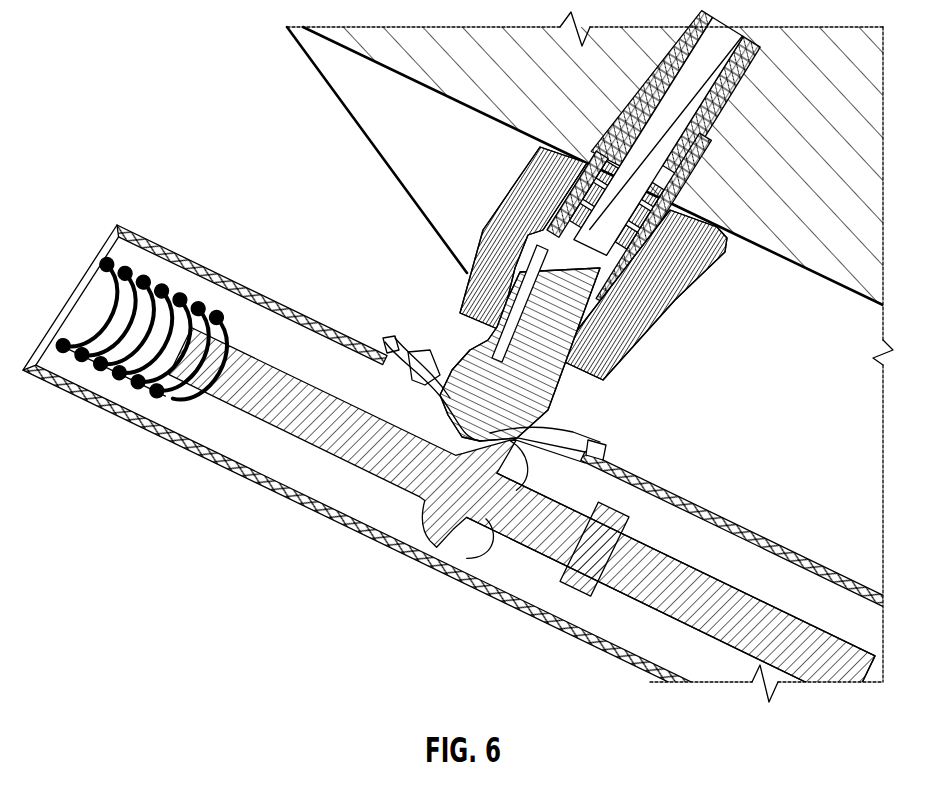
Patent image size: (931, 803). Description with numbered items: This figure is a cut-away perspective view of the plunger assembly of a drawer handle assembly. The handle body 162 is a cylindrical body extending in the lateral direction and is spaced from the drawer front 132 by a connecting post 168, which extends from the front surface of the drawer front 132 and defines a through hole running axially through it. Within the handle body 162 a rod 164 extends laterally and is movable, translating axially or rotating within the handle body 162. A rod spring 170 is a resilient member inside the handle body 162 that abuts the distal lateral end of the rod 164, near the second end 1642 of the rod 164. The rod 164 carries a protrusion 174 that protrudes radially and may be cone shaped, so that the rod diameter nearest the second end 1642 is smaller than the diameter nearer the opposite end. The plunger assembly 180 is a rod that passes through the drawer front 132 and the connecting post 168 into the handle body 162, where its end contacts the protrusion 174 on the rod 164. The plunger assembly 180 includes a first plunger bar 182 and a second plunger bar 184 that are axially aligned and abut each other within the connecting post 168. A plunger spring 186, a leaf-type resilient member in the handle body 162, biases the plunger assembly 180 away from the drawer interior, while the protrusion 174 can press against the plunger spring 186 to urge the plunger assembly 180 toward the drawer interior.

The drawer front 132 is at (337, 70).
The second end 1642 is at (232, 262).
The handle body 162 is at (528, 583).
The rod 164 is at (287, 415).
The connecting post 168 is at (490, 260).
The rod spring 170 is at (110, 357).
The protrusion 174 is at (437, 530).
The plunger assembly 180 is at (443, 121).
The first plunger bar 182 is at (567, 283).
The second plunger bar 184 is at (648, 150).
The plunger spring 186 is at (426, 368).